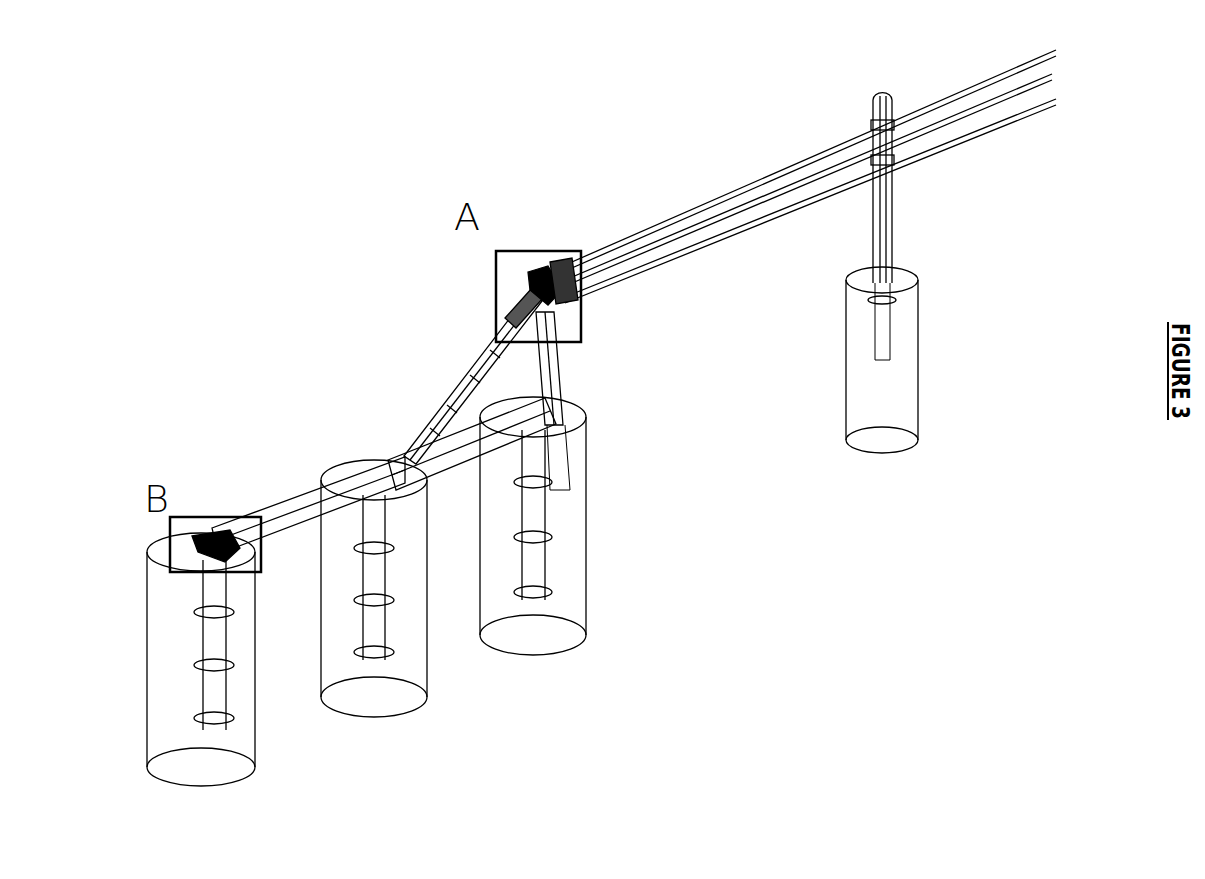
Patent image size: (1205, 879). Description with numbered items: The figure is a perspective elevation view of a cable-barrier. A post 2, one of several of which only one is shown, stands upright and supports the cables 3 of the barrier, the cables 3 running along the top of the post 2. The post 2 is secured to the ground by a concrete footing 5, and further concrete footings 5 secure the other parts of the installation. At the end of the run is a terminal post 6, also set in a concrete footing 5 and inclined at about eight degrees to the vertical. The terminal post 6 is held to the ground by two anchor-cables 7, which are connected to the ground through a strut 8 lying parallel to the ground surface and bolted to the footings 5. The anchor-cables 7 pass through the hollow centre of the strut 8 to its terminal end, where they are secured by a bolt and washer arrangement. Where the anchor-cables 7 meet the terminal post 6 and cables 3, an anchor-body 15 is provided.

The post 2 is at (872, 103).
The cables 3 is at (922, 158).
The concrete footing 5 is at (897, 400).
The terminal post 6 is at (560, 378).
The anchor-cables 7 is at (433, 413).
The strut 8 is at (280, 500).
The anchor-body 15 is at (507, 303).